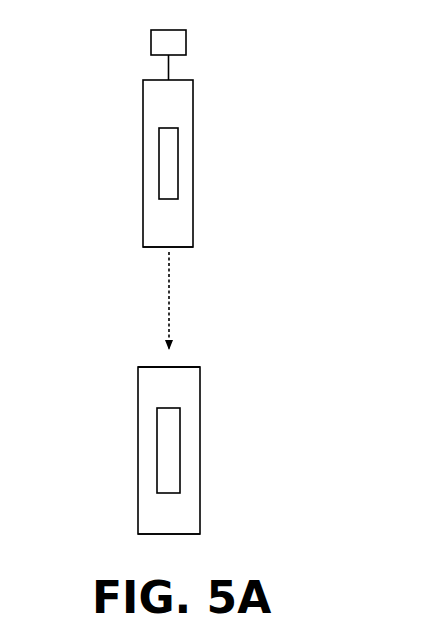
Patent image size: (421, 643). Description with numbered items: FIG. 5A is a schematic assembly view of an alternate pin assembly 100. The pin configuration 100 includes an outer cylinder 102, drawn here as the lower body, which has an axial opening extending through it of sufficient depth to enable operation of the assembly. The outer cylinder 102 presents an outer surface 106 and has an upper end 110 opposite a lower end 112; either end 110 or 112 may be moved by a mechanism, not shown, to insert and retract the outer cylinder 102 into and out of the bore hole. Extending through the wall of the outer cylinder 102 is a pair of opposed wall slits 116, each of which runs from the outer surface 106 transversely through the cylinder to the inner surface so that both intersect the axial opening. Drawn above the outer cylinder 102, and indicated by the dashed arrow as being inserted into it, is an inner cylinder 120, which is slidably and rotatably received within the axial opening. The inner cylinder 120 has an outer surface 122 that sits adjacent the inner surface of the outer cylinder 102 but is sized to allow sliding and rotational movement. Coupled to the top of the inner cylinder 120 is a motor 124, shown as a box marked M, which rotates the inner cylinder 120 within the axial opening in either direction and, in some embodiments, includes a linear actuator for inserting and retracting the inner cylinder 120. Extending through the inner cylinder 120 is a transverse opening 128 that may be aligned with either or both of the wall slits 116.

The pin assembly 100 is at (258, 275).
The outer cylinder 102 is at (204, 428).
The outer surface 106 is at (190, 385).
The upper end 110 is at (151, 367).
The lower end 112 is at (180, 534).
The wall slit 116 is at (167, 451).
The inner cylinder 120 is at (196, 104).
The outer surface 122 is at (180, 229).
The motor 124 is at (187, 42).
The transverse opening 128 is at (164, 173).